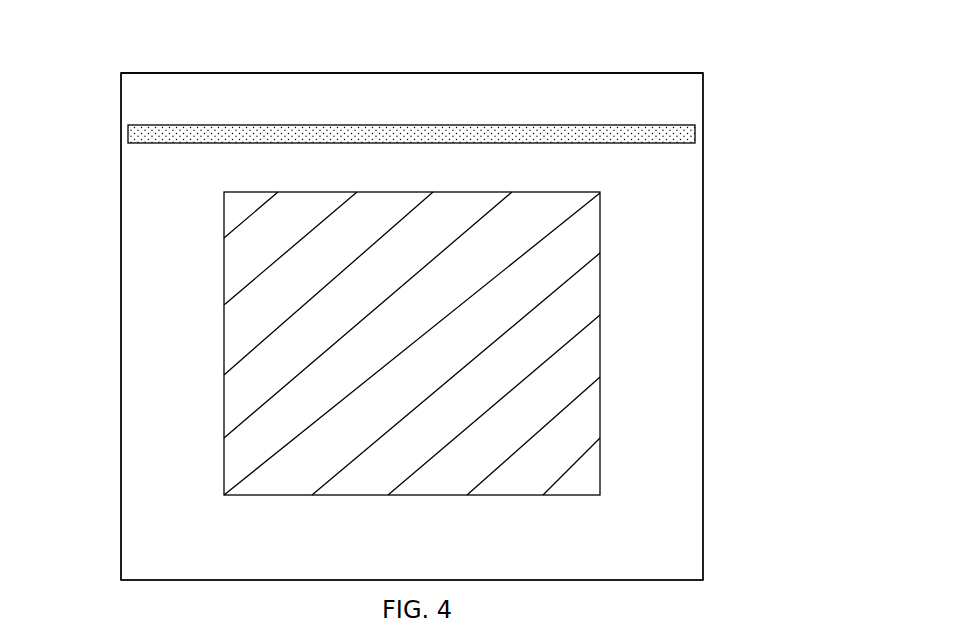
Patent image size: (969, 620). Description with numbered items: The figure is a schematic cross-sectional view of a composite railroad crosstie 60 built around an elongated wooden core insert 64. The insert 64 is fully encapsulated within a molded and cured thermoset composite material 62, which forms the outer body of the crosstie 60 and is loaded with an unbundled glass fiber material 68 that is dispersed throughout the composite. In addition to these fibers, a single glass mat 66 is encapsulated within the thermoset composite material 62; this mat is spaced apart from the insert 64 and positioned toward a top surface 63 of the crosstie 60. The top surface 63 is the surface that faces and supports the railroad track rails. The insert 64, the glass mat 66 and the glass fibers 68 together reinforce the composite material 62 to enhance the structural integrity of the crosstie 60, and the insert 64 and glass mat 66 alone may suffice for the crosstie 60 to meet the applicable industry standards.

The composite railroad crosstie 60 is at (647, 54).
The thermoset composite material 62 is at (687, 537).
The top surface 63 is at (189, 73).
The wooden core insert 64 is at (593, 410).
The glass mat 66 is at (128, 137).
The glass fiber material 68 is at (690, 262).